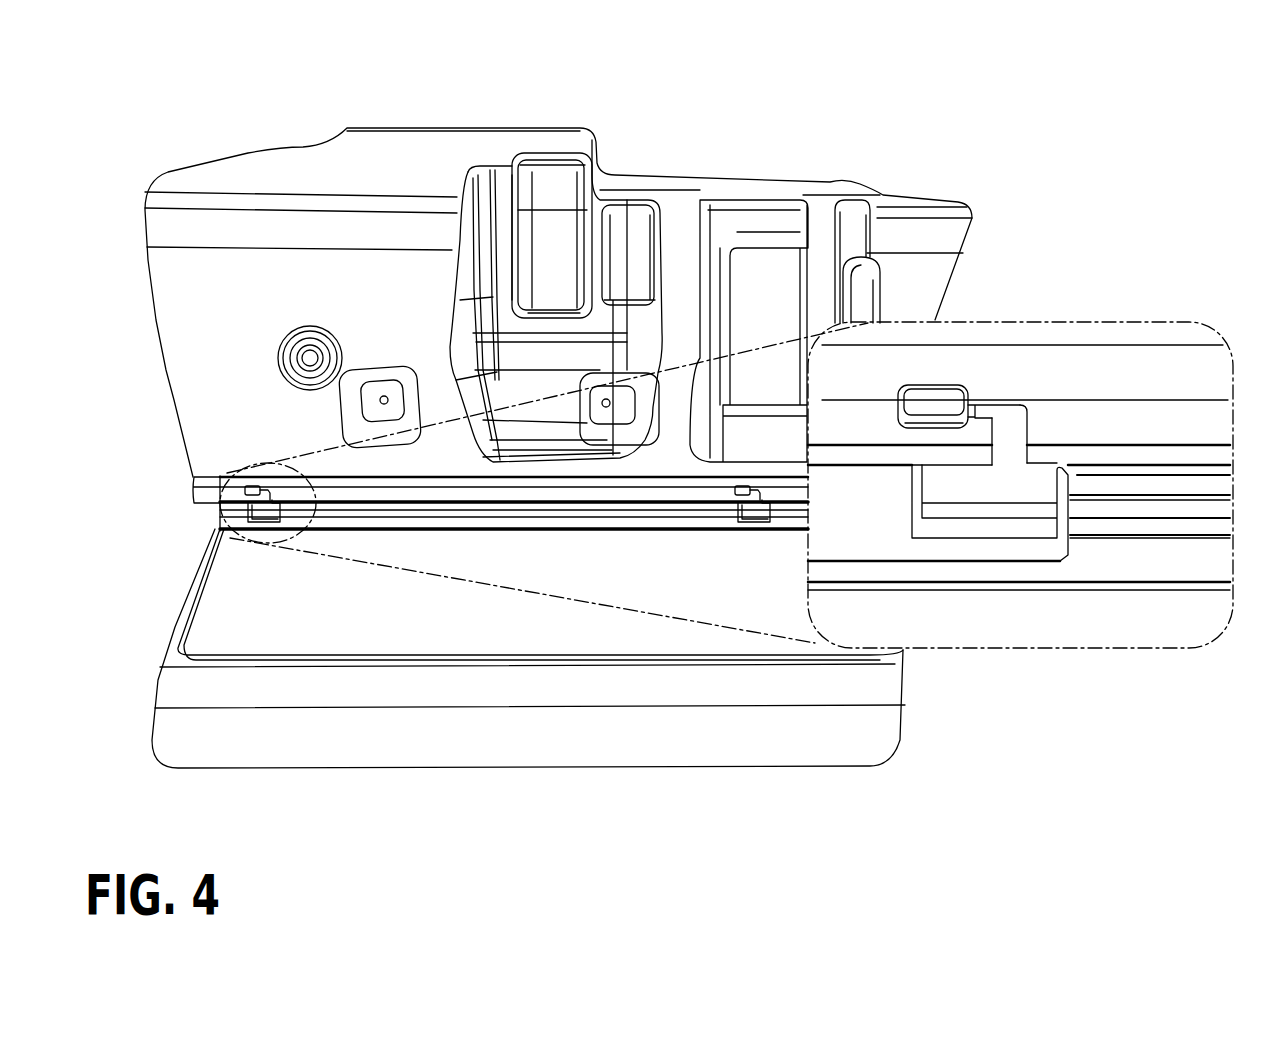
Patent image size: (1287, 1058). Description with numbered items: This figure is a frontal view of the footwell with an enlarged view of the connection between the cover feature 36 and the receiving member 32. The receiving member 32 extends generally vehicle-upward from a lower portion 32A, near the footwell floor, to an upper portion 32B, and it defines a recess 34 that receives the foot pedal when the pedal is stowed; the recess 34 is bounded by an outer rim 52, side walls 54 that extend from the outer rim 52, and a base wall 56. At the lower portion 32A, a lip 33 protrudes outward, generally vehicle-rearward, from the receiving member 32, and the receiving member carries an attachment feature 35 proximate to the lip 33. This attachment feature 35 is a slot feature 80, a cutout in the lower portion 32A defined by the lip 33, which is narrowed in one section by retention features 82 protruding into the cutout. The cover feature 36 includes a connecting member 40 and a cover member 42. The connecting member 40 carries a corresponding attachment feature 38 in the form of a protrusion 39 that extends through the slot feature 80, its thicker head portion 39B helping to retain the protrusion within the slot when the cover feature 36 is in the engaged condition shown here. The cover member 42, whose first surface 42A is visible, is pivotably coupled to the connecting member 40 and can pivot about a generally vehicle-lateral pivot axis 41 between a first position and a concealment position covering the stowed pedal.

The receiving member 32 is at (202, 300).
The lower portion 32A is at (187, 490).
The upper portion 32B is at (360, 123).
The lip 33 is at (196, 498).
The recess 34 is at (557, 287).
The attachment feature 35 is at (1013, 398).
The cover feature 36 is at (338, 643).
The attachment feature 38 is at (933, 400).
The protrusion 39 is at (905, 428).
The head portion 39B is at (940, 425).
The connecting member 40 is at (200, 578).
The pivot axis 41 is at (1170, 507).
The cover member 42 is at (273, 627).
The first surface 42A is at (1160, 570).
The outer rim 52 is at (720, 462).
The side walls 54 is at (638, 250).
The base wall 56 is at (510, 310).
The slot feature 80 is at (1030, 420).
The retention features 82 is at (975, 405).